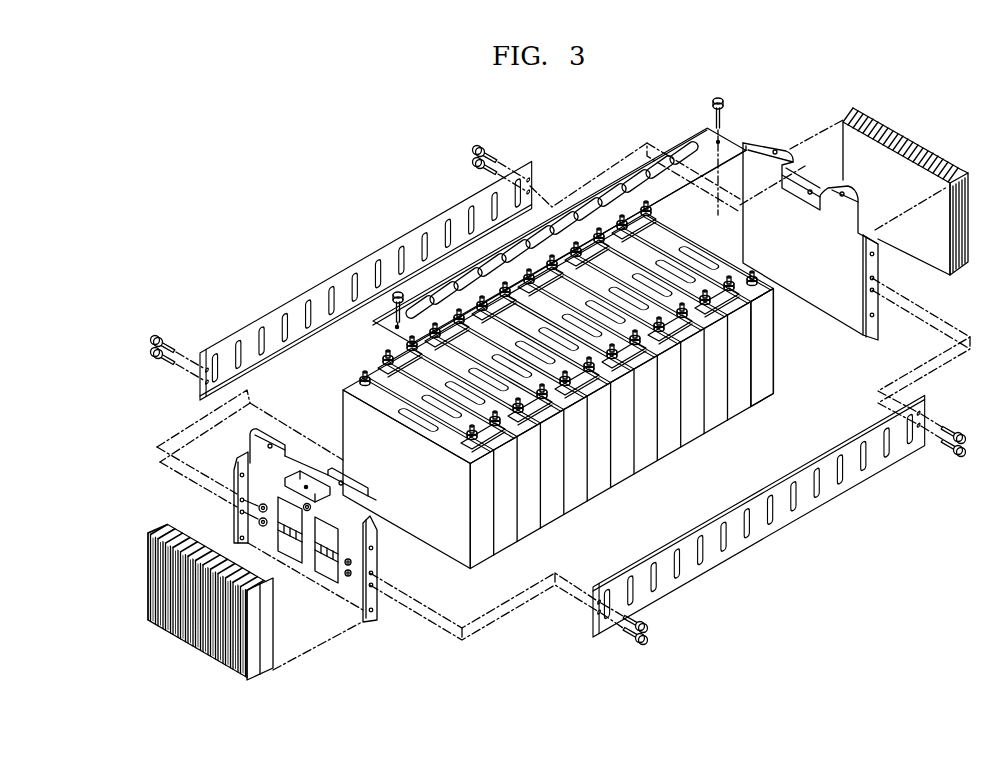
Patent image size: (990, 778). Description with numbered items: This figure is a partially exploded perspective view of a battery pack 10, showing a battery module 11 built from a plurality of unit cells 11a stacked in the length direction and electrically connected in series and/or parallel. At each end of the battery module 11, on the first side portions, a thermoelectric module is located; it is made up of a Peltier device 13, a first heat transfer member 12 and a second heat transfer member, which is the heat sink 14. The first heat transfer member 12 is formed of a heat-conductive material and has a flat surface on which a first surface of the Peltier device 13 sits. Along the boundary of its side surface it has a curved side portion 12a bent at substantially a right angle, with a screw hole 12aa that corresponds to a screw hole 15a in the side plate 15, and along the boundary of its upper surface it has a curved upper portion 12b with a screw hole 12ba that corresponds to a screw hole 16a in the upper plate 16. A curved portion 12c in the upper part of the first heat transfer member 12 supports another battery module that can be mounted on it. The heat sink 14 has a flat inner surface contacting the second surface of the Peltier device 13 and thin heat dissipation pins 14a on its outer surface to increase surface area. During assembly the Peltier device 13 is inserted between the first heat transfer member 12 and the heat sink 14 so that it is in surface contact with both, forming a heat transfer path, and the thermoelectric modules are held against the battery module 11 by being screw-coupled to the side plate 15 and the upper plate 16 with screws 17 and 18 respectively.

The battery module 10 is at (858, 615).
The battery module 11 is at (764, 358).
The unit cell 11a is at (738, 408).
The first heat transfer member 12 is at (343, 592).
The curved side portion 12a is at (366, 621).
The screw hole 12aa is at (370, 586).
The curved upper portion 12b is at (300, 476).
The screw hole 12ba is at (306, 486).
The curved portion 12c is at (250, 430).
The Peltier device 13 is at (326, 578).
The heat sink 14 is at (260, 684).
The heat dissipation pins 14a is at (147, 622).
The side plate 15 is at (737, 543).
The screw hole 15a is at (601, 620).
The upper plate 16 is at (698, 140).
The screw hole 16a is at (396, 326).
The screw 17 is at (647, 642).
The screw 18 is at (397, 292).